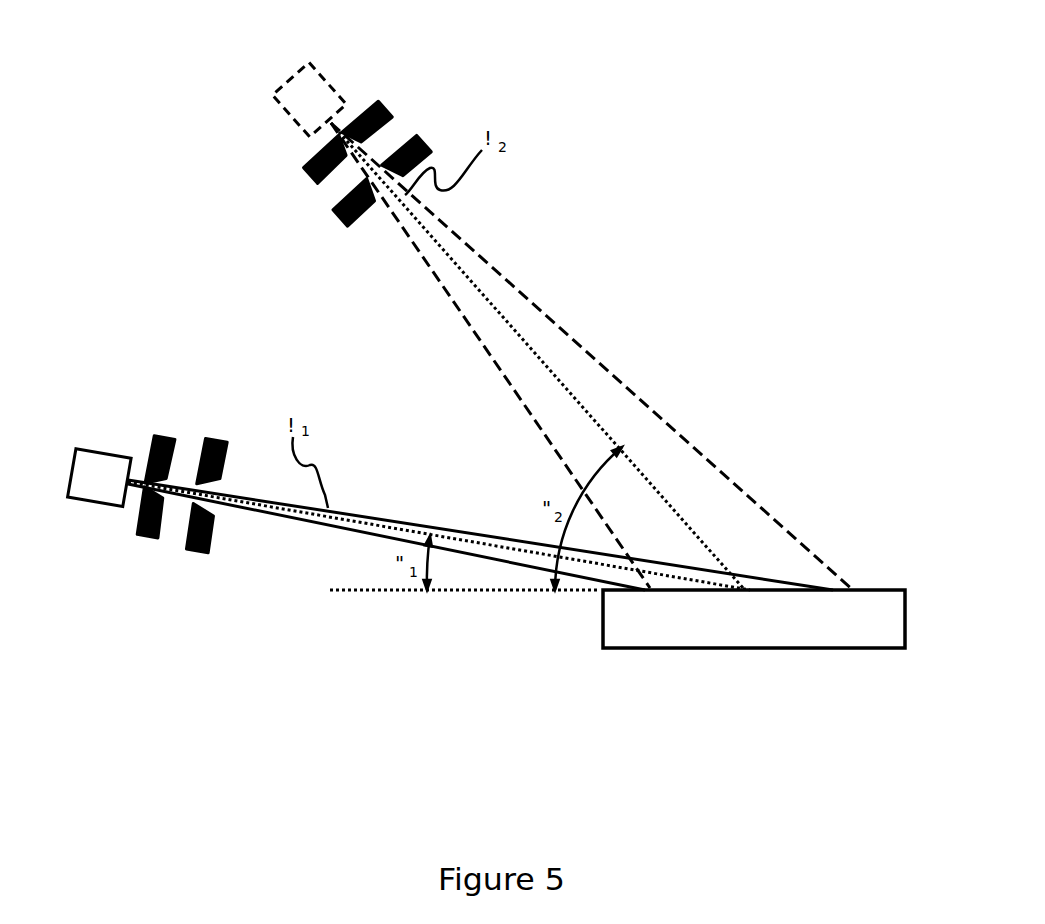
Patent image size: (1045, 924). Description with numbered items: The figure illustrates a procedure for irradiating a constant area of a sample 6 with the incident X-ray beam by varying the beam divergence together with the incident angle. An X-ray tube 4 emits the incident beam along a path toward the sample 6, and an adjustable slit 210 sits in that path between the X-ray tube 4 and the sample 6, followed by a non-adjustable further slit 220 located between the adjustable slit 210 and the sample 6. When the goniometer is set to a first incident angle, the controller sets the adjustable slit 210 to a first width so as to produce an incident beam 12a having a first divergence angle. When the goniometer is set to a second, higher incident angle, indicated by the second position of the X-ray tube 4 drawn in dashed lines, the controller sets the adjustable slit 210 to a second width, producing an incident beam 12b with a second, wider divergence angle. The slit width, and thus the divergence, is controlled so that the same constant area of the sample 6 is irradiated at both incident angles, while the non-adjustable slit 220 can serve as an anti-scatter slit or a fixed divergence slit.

The X-ray tube 4 is at (93, 463).
The adjustable slit 210 is at (145, 537).
The non-adjustable further slit 220 is at (200, 552).
The incident beam 12a is at (500, 545).
The incident beam 12b is at (608, 397).
The sample 6 is at (620, 648).